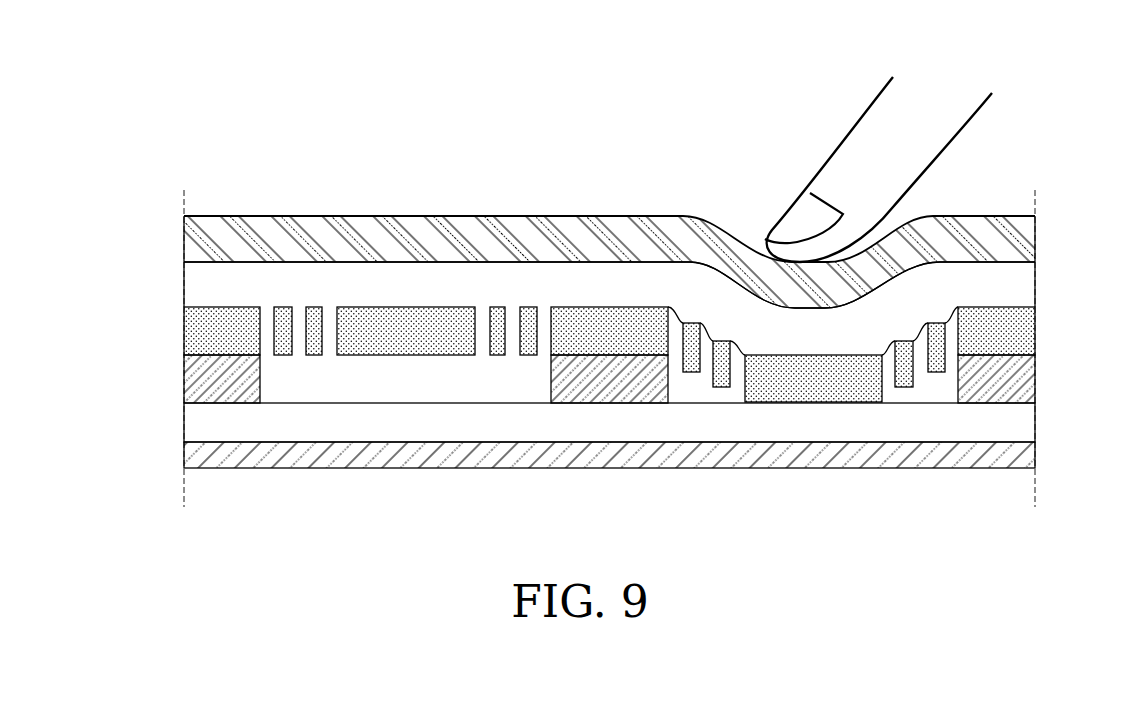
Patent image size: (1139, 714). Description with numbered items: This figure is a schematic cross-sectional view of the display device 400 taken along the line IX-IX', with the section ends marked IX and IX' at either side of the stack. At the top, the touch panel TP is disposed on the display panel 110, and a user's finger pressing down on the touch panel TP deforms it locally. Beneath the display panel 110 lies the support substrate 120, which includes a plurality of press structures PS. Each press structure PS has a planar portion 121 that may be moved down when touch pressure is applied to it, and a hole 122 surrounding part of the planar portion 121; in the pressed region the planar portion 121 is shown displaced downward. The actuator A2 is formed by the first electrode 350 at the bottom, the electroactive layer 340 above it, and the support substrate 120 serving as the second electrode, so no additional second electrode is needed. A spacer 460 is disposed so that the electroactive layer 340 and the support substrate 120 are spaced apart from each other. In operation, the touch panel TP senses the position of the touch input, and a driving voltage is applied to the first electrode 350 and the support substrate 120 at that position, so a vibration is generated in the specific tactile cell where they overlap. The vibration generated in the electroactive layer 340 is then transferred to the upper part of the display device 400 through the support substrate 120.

The display device 400 is at (1030, 44).
The touch panel TP is at (205, 238).
The display panel 110 is at (205, 286).
The support substrate 120 is at (569, 260).
The press structure PS is at (609, 260).
The planar portion 121 is at (398, 333).
The hole 122 is at (322, 333).
The spacer 460 is at (1013, 380).
The electroactive layer 340 is at (205, 422).
The first electrode 350 is at (205, 457).
The actuator A2 is at (100, 337).
The section line IX is at (178, 336).
The section line IX' is at (1031, 336).